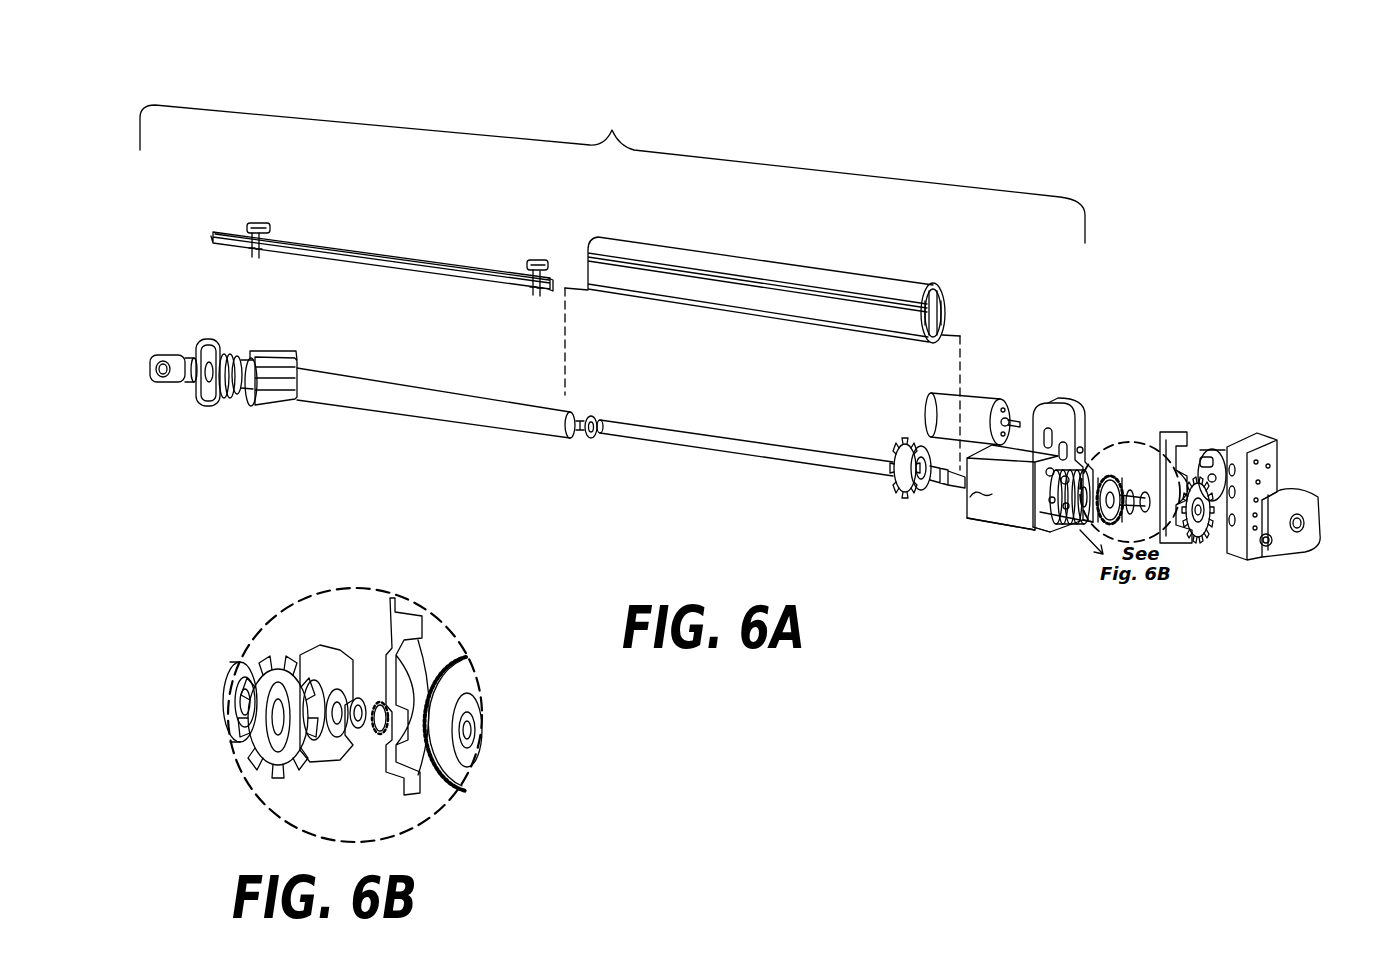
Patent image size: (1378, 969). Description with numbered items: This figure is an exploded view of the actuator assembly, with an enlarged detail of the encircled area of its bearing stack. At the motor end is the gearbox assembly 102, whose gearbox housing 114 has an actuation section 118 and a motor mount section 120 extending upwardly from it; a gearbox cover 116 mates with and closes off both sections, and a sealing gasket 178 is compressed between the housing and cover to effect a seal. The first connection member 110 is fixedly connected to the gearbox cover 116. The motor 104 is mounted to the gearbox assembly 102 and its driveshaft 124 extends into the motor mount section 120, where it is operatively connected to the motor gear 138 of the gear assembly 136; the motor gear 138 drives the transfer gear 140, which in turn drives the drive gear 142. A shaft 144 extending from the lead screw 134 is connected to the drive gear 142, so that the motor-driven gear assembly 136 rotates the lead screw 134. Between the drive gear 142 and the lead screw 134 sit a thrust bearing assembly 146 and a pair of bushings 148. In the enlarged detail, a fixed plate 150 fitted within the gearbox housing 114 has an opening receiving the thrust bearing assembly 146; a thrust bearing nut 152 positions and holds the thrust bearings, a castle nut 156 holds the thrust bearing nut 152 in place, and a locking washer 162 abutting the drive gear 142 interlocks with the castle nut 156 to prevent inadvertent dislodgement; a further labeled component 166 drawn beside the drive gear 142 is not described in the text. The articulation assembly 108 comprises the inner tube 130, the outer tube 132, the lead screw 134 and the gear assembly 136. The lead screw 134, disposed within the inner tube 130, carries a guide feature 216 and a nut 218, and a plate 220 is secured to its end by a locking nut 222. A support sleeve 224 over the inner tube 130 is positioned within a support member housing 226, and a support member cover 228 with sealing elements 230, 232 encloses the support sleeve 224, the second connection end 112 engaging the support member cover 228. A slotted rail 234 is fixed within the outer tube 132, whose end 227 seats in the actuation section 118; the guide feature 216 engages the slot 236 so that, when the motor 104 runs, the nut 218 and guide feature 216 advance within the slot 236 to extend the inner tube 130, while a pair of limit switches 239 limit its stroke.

In FIG. 6A, the articulation assembly 108 is at (613, 128).
In FIG. 6A, the slotted rail 234 is at (470, 287).
In FIG. 6A, the limit switches 239 is at (262, 224).
In FIG. 6A, the slot 236 is at (560, 262).
In FIG. 6A, the outer tube 132 is at (765, 298).
In FIG. 6A, the end of outer tube 227 is at (945, 285).
In FIG. 6A, the second connection end 112 is at (155, 383).
In FIG. 6A, the support member cover 228 is at (198, 343).
In FIG. 6A, the sealing element 230 is at (228, 353).
In FIG. 6A, the sealing element 232 is at (233, 353).
In FIG. 6A, the support sleeve 224 is at (237, 400).
In FIG. 6A, the support member housing 226 is at (273, 410).
In FIG. 6A, the inner tube 130 is at (443, 425).
In FIG. 6A, the locking nut 222 is at (586, 416).
In FIG. 6A, the plate 220 is at (590, 440).
In FIG. 6A, the lead screw 134 is at (740, 462).
In FIG. 6A, the nut 218 is at (895, 455).
In FIG. 6A, the guide feature 216 is at (920, 497).
In FIG. 6A, the motor 104 is at (972, 395).
In FIG. 6A, the driveshaft 124 is at (1012, 422).
In FIG. 6A, the shaft 144 is at (942, 488).
In FIG. 6A, the actuation section 118 is at (962, 519).
In FIG. 6A, the gearbox assembly 102 is at (992, 535).
In FIG. 6A, the gearbox housing 114 is at (1023, 530).
In FIG. 6A, the motor mount section 120 is at (1075, 405).
In FIG. 6A, the sealing gasket 178 is at (1080, 447).
In FIG. 6A, the bushings 148 is at (1072, 440).
In FIG. 6A, the thrust bearing assembly 146 is at (1094, 466).
In FIG. 6A, the bracket plate 166 is at (1173, 433).
In FIG. 6B, the bracket plate 166 is at (420, 787).
In FIG. 6A, the drive gear 142 is at (1193, 535).
In FIG. 6A, the motor gear 138 is at (1215, 434).
In FIG. 6A, the gear assembly 136 is at (1217, 450).
In FIG. 6A, the transfer gear 140 is at (1212, 460).
In FIG. 6A, the gearbox cover 116 is at (1280, 440).
In FIG. 6A, the first connection member 110 is at (1303, 552).
In FIG. 6B, the fixed plate 150 is at (303, 650).
In FIG. 6B, the thrust bearing nut 152 is at (303, 778).
In FIG. 6B, the locking washer 162 is at (380, 707).
In FIG. 6B, the castle nut 156 is at (358, 745).